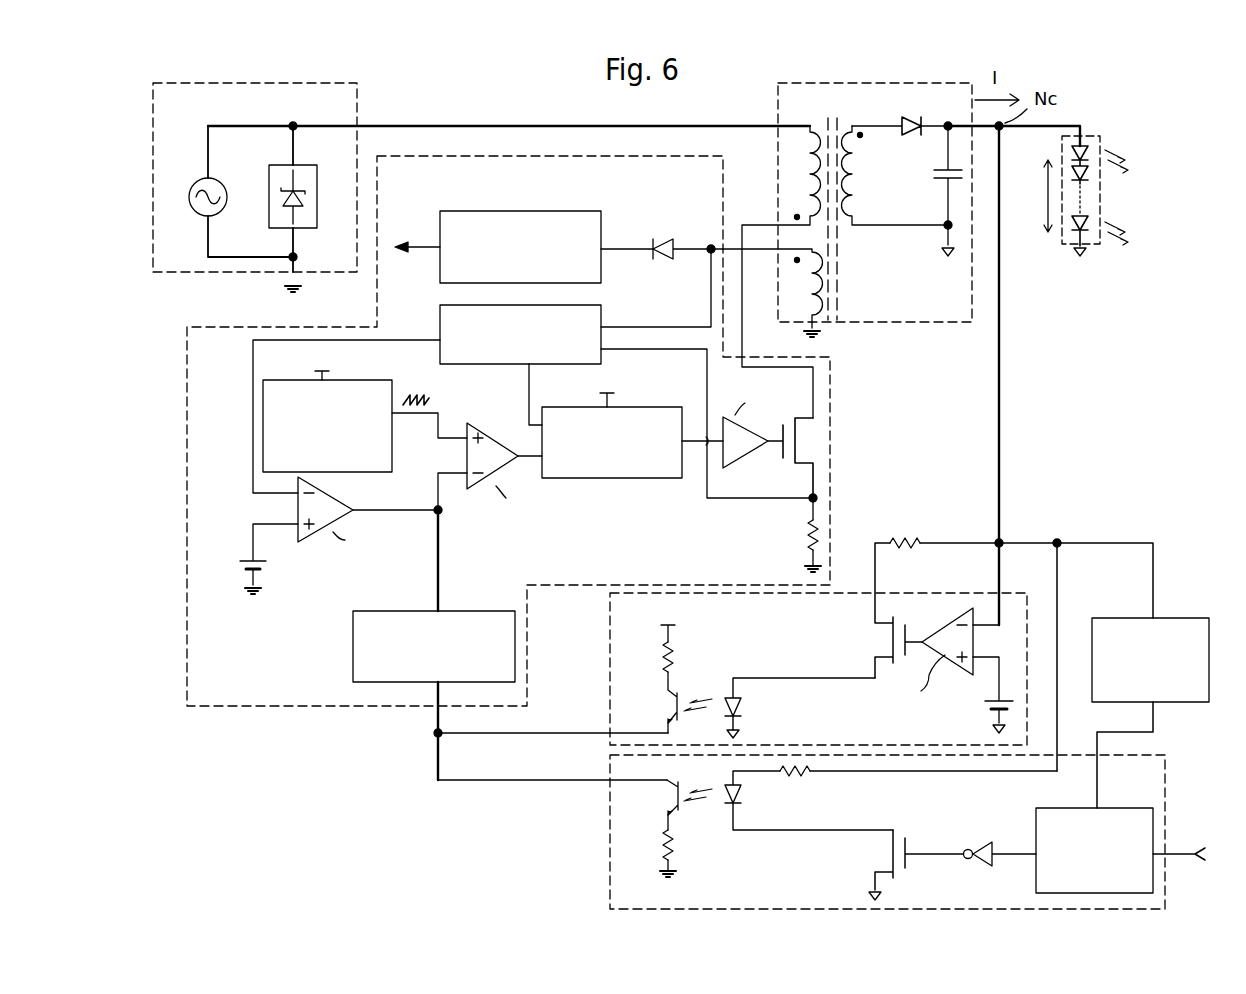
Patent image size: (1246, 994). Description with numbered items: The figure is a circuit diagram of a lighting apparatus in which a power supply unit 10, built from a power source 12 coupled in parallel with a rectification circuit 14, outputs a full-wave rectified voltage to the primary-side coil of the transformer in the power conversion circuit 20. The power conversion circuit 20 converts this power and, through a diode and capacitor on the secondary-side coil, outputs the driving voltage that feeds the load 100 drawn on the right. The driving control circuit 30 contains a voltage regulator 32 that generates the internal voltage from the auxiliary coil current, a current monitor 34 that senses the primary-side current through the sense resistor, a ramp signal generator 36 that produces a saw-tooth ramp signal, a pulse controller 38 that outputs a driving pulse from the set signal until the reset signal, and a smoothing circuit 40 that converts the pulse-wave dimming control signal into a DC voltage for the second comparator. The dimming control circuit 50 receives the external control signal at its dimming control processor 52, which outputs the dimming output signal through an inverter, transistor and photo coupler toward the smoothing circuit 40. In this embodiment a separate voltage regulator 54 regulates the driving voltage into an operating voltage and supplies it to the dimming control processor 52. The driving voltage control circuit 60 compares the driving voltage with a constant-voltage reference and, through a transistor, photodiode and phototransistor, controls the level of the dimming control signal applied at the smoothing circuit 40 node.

The power supply unit 10 is at (255, 204).
The power source 12 is at (192, 186).
The rectification circuit 14 is at (269, 186).
The power conversion circuit 20 is at (890, 323).
The driving control circuit 30 is at (507, 458).
The voltage regulator 32 is at (600, 211).
The current monitor 34 is at (600, 305).
The ramp signal generator 36 is at (356, 380).
The pulse controller 38 is at (632, 447).
The smoothing circuit 40 is at (462, 611).
The dimming control circuit 50 is at (896, 832).
The dimming control processor 52 is at (1120, 808).
The voltage regulator 54 is at (1178, 618).
The driving voltage control circuit 60 is at (610, 690).
The LED array 100 is at (1100, 240).